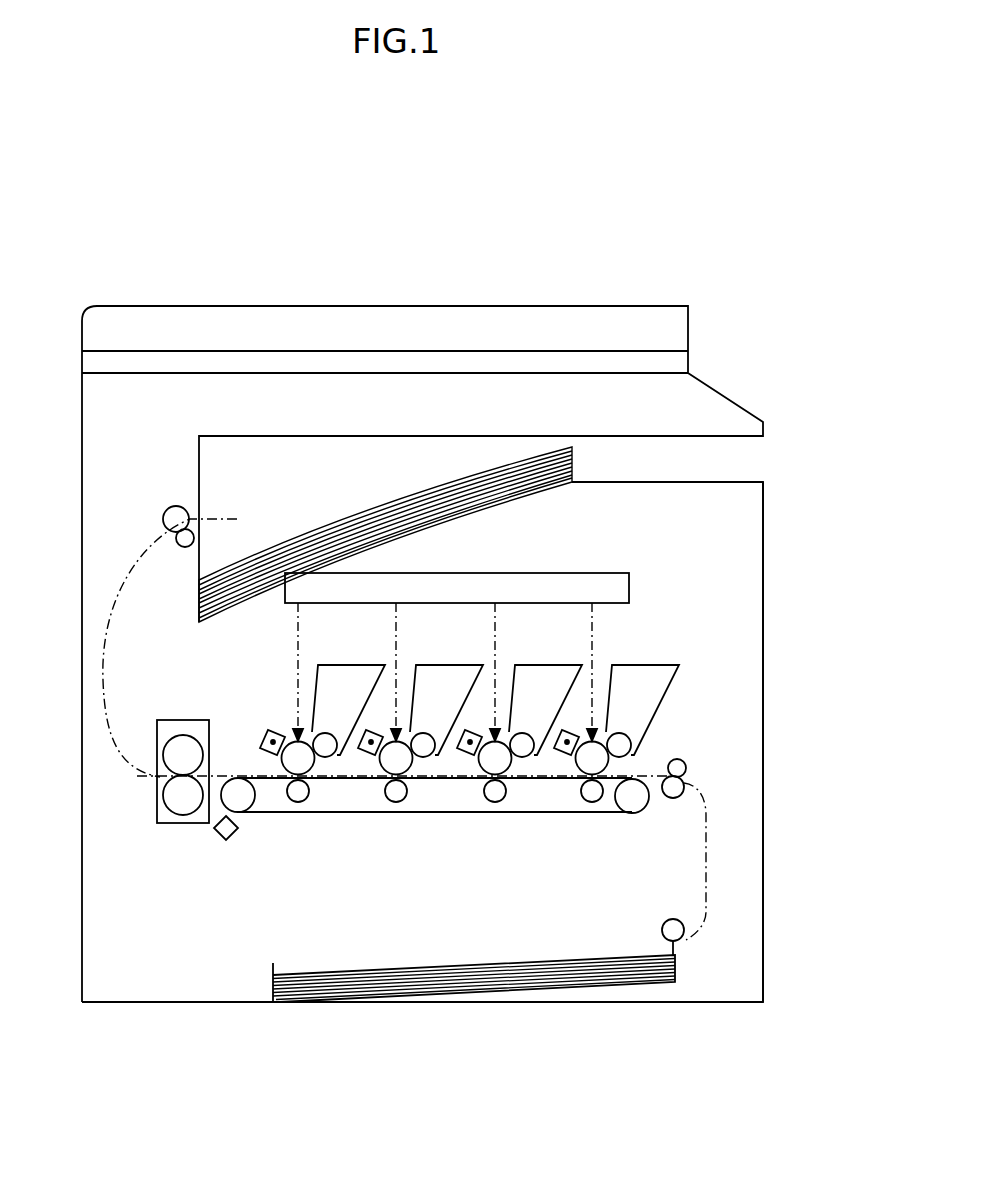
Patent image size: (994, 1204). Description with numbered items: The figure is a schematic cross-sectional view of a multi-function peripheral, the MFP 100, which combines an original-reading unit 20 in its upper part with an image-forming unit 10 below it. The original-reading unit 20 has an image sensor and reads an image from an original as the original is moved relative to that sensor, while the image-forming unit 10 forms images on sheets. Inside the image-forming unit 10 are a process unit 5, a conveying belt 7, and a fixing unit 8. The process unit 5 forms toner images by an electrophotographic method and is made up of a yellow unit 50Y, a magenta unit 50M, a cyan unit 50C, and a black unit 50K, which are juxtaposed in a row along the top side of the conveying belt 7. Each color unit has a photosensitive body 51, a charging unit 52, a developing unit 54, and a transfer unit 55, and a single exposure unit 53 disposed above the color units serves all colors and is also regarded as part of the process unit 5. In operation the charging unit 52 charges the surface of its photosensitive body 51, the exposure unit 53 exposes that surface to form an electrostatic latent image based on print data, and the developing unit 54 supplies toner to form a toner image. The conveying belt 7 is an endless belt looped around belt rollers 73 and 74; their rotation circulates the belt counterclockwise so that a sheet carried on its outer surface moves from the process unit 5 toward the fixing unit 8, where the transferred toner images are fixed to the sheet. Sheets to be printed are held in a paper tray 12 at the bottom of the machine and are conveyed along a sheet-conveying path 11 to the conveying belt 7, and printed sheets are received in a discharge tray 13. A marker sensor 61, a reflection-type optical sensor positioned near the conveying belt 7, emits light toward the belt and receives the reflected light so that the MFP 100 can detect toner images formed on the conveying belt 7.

The MFP 100 is at (530, 247).
The original-reading unit 20 is at (170, 306).
The image-forming unit 10 is at (722, 571).
The discharge tray 13 is at (377, 527).
The exposure unit 53 is at (490, 578).
The developing unit 54 is at (655, 663).
The charging unit 52 is at (573, 732).
The photosensitive body 51 is at (610, 767).
The sheet-conveying path 11 is at (711, 842).
The fixing unit 8 is at (155, 788).
The belt roller 74 is at (237, 787).
The marker sensor 61 is at (215, 832).
The conveying belt 7 is at (450, 792).
The belt roller 73 is at (633, 800).
The transfer unit 55 is at (592, 802).
The yellow unit 50Y is at (320, 788).
The magenta unit 50M is at (375, 788).
The cyan unit 50C is at (470, 788).
The black unit 50K is at (623, 746).
The process unit 5 is at (491, 766).
The paper tray 12 is at (507, 978).